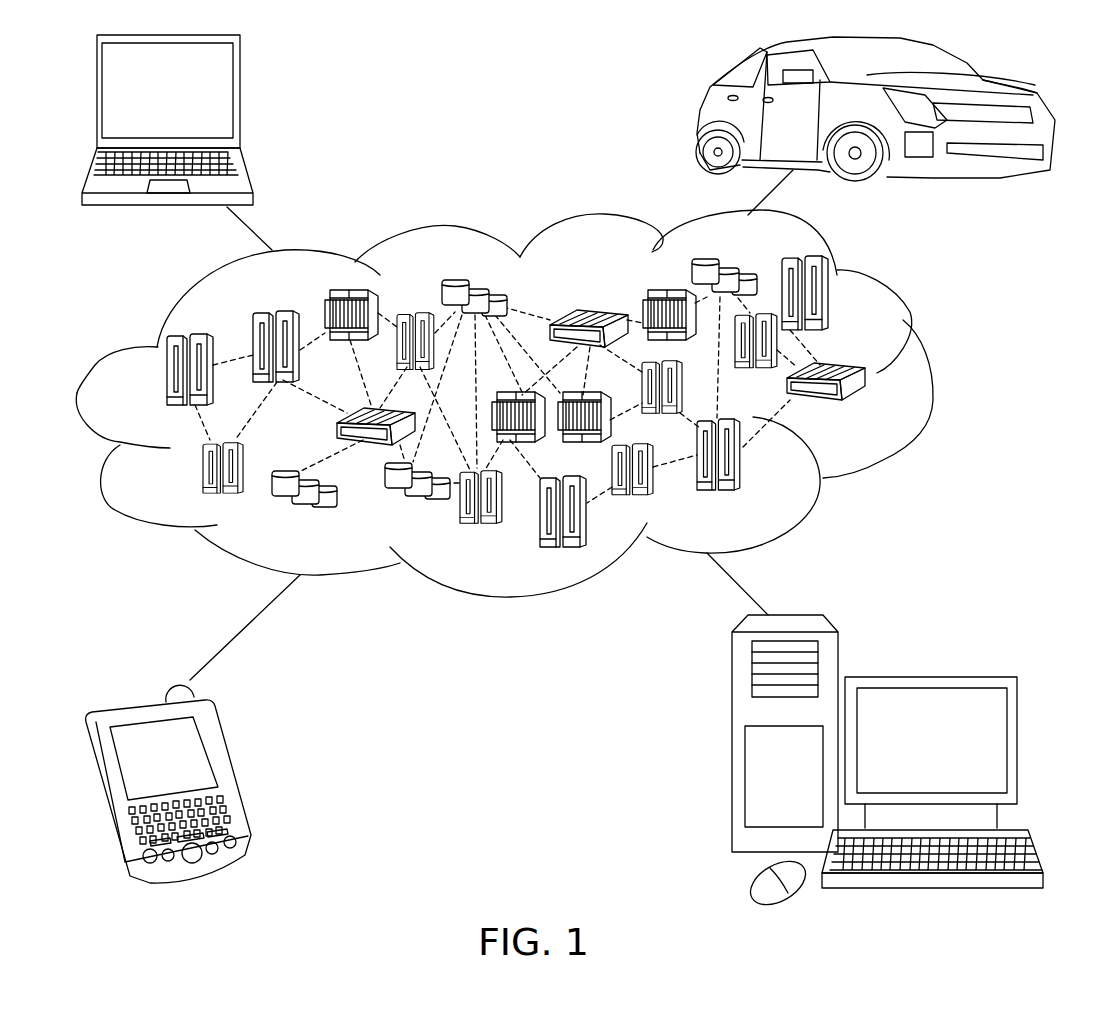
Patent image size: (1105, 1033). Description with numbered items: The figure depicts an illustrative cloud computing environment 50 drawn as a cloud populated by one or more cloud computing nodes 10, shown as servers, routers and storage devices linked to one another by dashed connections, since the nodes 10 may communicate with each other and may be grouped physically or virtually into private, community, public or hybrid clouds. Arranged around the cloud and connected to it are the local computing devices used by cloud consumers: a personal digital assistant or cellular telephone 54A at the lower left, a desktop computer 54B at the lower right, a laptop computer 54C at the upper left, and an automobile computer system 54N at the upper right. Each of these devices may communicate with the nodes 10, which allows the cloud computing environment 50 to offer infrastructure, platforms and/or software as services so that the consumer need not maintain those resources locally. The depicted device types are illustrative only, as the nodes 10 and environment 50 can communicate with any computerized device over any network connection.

The cloud computing node 10 is at (868, 408).
The cloud computing environment 50 is at (535, 403).
The personal digital assistant or cellular telephone 54A is at (228, 772).
The desktop computer 54B is at (930, 672).
The laptop computer 54C is at (240, 98).
The automobile computer system 54N is at (700, 117).